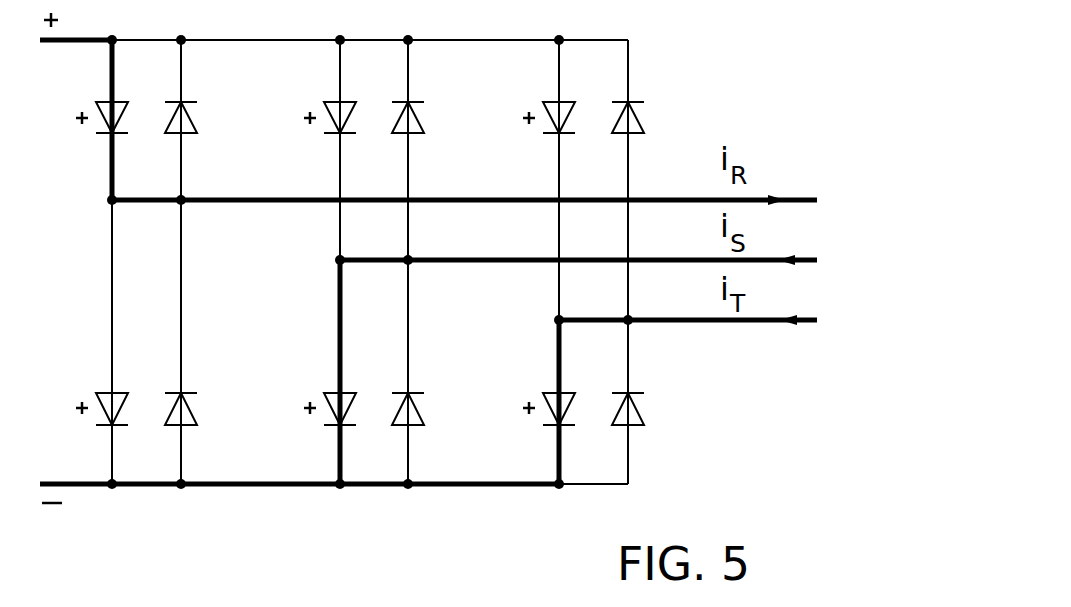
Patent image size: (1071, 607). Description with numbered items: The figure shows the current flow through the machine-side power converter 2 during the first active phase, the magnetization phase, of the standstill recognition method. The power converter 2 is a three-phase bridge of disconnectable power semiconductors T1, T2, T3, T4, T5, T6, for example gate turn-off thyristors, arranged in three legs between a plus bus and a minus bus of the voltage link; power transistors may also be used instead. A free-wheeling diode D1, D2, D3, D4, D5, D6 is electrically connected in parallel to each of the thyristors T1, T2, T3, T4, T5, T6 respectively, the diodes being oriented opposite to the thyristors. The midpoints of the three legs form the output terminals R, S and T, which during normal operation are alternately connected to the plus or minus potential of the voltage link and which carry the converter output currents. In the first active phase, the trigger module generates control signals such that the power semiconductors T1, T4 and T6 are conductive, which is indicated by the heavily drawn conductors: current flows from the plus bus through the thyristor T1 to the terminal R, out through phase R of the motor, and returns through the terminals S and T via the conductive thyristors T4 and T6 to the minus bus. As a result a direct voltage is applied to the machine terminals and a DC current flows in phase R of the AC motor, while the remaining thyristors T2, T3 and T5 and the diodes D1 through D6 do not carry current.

The machine-side power converter 2 is at (388, 543).
The disconnectable power semiconductor T1 is at (104, 101).
The disconnectable power semiconductor T2 is at (106, 427).
The disconnectable power semiconductor T3 is at (333, 101).
The disconnectable power semiconductor T4 is at (334, 427).
The disconnectable power semiconductor T5 is at (552, 101).
The disconnectable power semiconductor T6 is at (553, 427).
The free-wheeling diode D1 is at (181, 101).
The free-wheeling diode D2 is at (186, 427).
The free-wheeling diode D3 is at (409, 101).
The free-wheeling diode D4 is at (410, 427).
The free-wheeling diode D5 is at (629, 101).
The free-wheeling diode D6 is at (632, 427).
The output terminal R is at (132, 237).
The output terminal S is at (363, 294).
The output terminal T is at (587, 352).